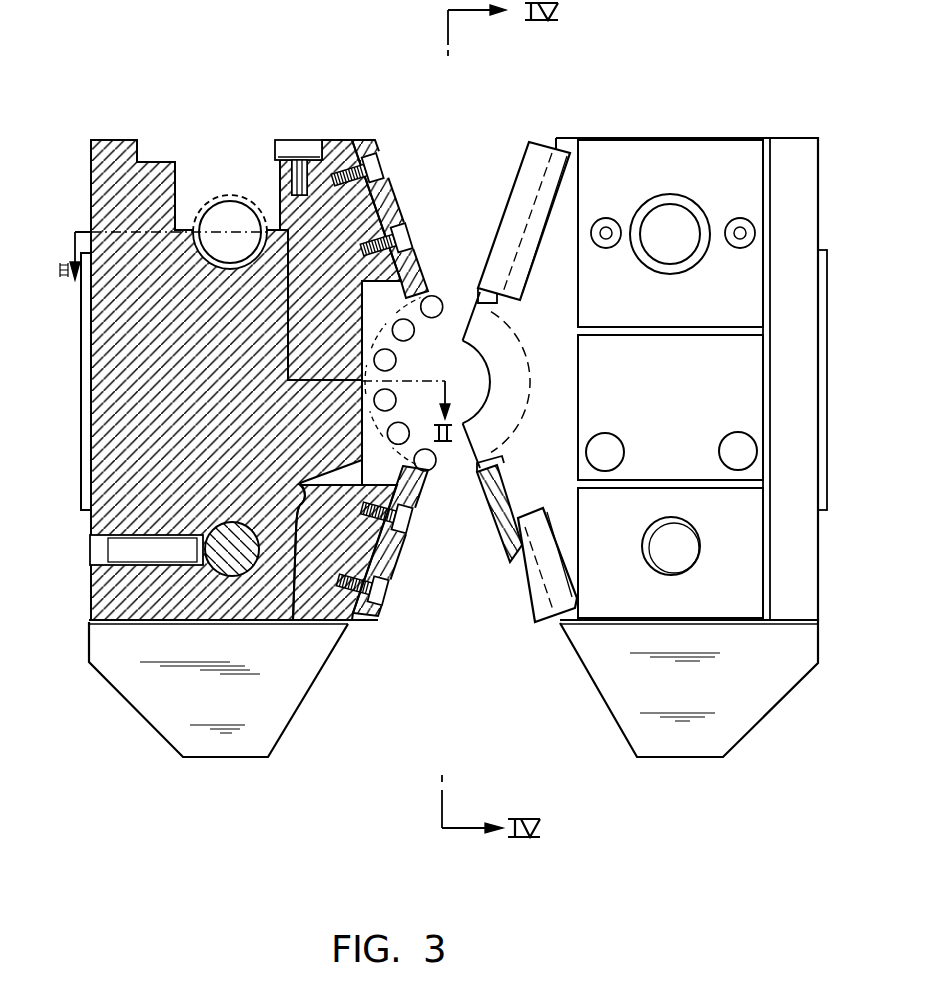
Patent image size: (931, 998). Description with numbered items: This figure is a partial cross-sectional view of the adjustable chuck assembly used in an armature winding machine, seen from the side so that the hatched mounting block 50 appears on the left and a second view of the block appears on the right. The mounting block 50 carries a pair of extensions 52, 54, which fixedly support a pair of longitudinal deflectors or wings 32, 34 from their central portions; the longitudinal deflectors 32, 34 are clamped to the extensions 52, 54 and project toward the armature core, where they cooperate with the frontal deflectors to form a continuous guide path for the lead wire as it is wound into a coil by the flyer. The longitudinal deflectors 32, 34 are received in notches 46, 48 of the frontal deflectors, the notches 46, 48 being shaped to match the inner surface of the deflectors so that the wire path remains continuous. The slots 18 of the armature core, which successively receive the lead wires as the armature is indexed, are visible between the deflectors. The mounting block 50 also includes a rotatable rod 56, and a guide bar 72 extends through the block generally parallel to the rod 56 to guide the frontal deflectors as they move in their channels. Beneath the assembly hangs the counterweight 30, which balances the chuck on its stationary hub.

The slots 18 is at (432, 296).
The counterweight 30 is at (222, 742).
The longitudinal deflector 32 is at (387, 205).
The longitudinal deflector 34 is at (392, 569).
The notch 46 is at (498, 300).
The notch 48 is at (498, 462).
The mounting block 50 is at (118, 385).
The extension 52 is at (330, 160).
The extension 54 is at (322, 602).
The rotatable rod 56 is at (228, 218).
The guide bar 72 is at (218, 580).